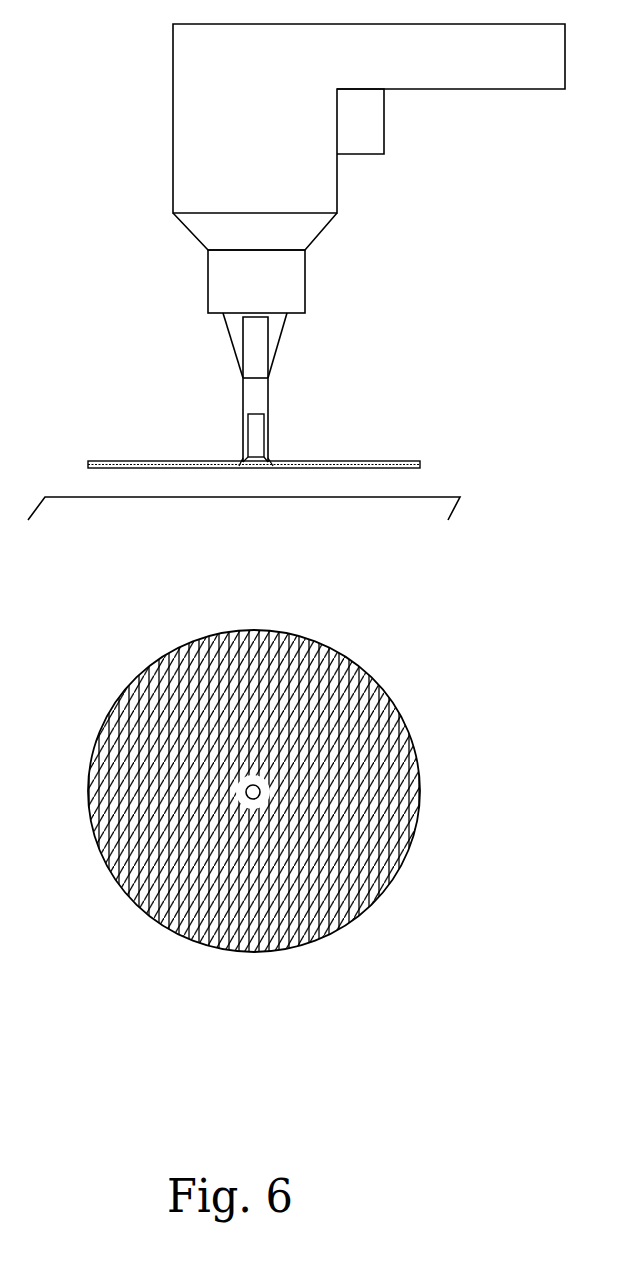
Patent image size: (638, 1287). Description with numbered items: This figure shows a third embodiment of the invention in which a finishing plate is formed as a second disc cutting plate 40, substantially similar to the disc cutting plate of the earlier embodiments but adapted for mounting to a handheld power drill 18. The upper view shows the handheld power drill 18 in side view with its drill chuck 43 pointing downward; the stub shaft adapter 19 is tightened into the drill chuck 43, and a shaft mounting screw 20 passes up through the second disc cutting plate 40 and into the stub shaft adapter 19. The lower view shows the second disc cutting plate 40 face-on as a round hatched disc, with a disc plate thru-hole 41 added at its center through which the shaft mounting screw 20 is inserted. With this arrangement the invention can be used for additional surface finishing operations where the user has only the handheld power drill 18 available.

The handheld power drill 18 is at (337, 177).
The stub shaft adapter 19 is at (268, 400).
The shaft mounting screw 20 is at (258, 433).
The second disc cutting plate 40 is at (417, 460).
The disc plate thru-hole 41 is at (260, 788).
The drill chuck 43 is at (230, 343).